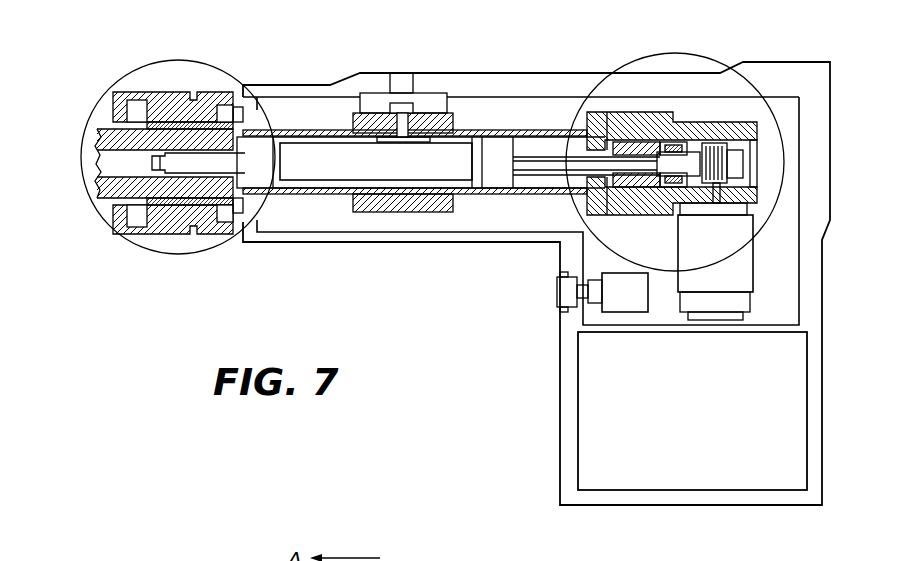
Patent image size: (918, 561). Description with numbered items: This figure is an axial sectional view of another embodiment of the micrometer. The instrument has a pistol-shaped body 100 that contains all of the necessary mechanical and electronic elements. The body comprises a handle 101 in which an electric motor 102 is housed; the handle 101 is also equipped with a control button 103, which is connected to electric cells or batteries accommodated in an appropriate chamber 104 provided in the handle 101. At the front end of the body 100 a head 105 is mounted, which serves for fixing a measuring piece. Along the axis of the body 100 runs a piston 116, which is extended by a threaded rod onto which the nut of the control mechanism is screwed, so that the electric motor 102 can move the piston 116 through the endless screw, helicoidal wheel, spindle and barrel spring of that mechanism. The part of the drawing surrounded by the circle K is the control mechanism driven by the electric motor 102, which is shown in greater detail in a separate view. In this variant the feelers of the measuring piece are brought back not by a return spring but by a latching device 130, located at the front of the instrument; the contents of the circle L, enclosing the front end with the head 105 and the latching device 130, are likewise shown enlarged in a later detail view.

The pistol-shaped body 100 is at (511, 66).
The handle 101 is at (548, 434).
The electric motor 102 is at (715, 283).
The control button 103 is at (557, 290).
The chamber 104 is at (692, 468).
The head 105 is at (210, 76).
The piston 116 is at (318, 153).
The latching device 130 is at (207, 166).
The circle L is at (172, 59).
The circle K is at (620, 66).